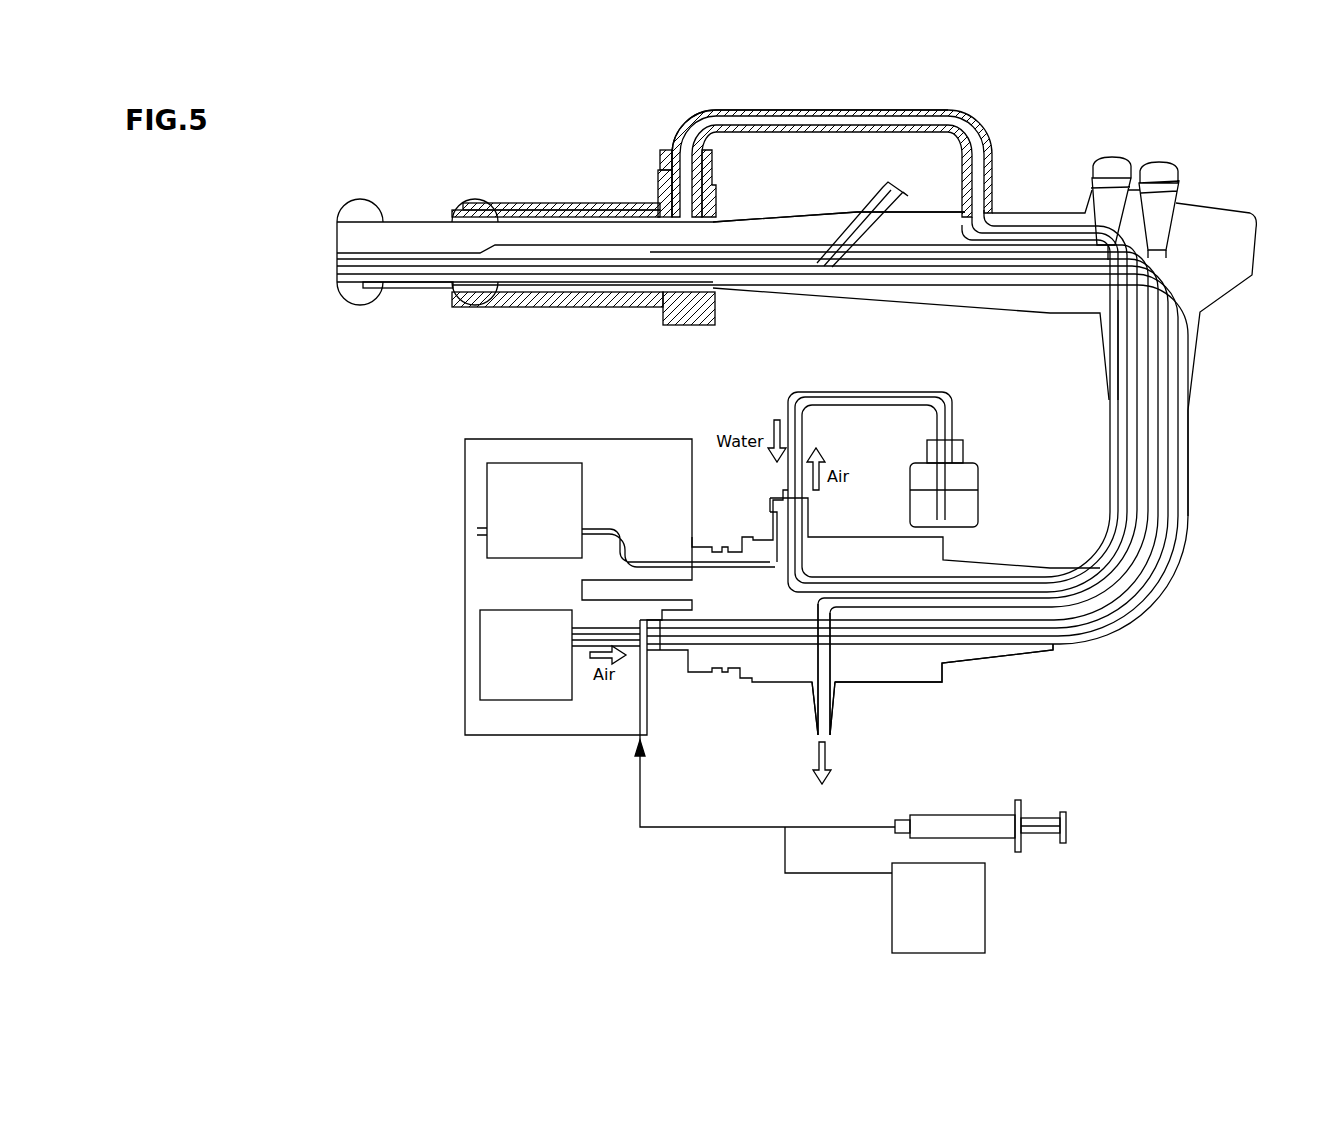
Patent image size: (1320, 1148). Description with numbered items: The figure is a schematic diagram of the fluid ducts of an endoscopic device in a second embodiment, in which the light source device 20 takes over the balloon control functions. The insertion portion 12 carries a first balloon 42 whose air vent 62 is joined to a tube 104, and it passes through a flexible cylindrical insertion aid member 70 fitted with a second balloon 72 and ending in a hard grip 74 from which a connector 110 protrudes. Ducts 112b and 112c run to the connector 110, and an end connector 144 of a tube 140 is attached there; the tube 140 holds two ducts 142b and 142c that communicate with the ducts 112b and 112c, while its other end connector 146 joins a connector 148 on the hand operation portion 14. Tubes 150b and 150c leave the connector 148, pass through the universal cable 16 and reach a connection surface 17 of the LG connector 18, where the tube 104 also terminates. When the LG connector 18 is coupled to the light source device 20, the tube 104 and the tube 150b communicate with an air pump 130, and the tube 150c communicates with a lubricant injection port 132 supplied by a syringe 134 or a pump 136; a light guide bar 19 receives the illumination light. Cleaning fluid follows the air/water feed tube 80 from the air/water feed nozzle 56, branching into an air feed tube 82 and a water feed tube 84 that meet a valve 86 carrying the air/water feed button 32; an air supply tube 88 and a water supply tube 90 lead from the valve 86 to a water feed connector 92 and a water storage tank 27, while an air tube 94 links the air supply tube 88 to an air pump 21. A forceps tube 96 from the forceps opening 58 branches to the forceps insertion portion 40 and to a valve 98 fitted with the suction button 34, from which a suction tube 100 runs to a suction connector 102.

The insertion portion 12 is at (400, 222).
The hand operation portion 14 is at (1030, 312).
The universal cable 16 is at (1190, 548).
The connection surface 17 is at (660, 700).
The LG connector 18 is at (940, 682).
The light guide bar 19 is at (655, 575).
The light source device 20 is at (465, 700).
The air pump 21 is at (487, 496).
The water storage tank 27 is at (978, 495).
The air/water feed button 32 is at (1110, 157).
The suction button 34 is at (1157, 162).
The forceps insertion portion 40 is at (905, 188).
The first balloon 42 is at (362, 200).
The air/water feed nozzle 56 is at (340, 252).
The forceps opening 58 is at (340, 268).
The air vent 62 is at (365, 303).
The insertion aid member 70 is at (548, 203).
The second balloon 72 is at (478, 200).
The grip 74 is at (668, 312).
The air/water feed tube 80 is at (410, 288).
The air feed tube 82 is at (855, 262).
The water feed tube 84 is at (905, 248).
The valve 86 is at (1100, 200).
The air supply tube 88 is at (1120, 330).
The water supply tube 90 is at (1115, 378).
The water feed connector 92 is at (808, 500).
The air tube 94 is at (760, 562).
The forceps tube 96 is at (795, 270).
The valve 98 is at (1160, 208).
The suction tube 100 is at (1160, 325).
The suction connector 102 is at (835, 705).
The tube 104 is at (448, 292).
The connector 110 is at (660, 160).
The duct 112b is at (658, 195).
The duct 112c is at (716, 200).
The air pump 130 is at (480, 630).
The lubricant injection port 132 is at (637, 742).
The syringe 134 is at (950, 818).
The pump 136 is at (985, 905).
The tube 140 is at (822, 140).
The duct 142b is at (975, 112).
The duct 142c is at (915, 132).
The end connector 144 is at (670, 150).
The end connector 146 is at (1000, 185).
The connector 148 is at (1010, 207).
The tube 150b is at (1010, 237).
The tube 150c is at (985, 242).